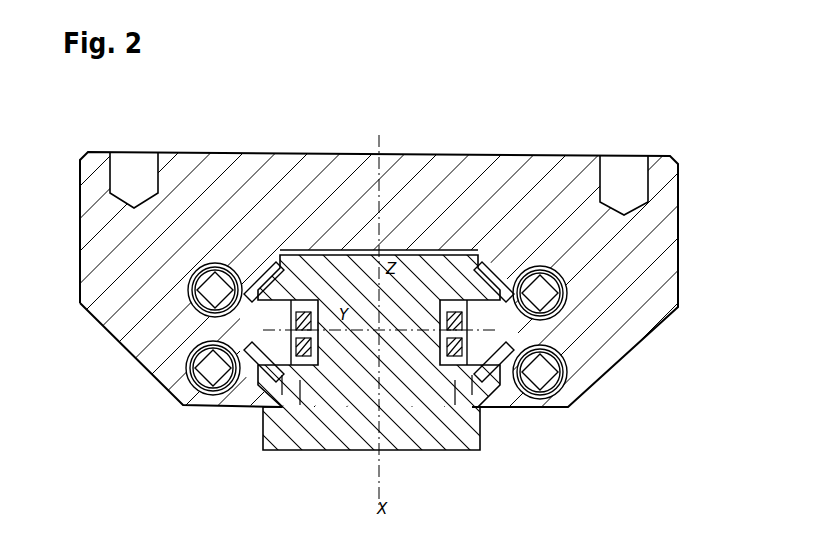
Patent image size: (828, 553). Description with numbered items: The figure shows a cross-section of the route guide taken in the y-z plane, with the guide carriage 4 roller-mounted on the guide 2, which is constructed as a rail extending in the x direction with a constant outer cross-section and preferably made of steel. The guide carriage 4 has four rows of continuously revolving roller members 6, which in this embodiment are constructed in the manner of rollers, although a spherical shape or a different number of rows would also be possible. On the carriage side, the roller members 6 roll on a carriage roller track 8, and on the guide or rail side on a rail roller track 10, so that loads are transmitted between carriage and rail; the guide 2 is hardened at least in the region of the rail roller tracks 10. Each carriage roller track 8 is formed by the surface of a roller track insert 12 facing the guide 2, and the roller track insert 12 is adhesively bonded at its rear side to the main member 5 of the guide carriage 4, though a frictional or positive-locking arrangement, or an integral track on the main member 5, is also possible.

The guide 2 is at (481, 450).
The guide carriage 4 is at (443, 150).
The main member 5 is at (512, 172).
The roller members 6 is at (288, 292).
The carriage roller track 8 is at (300, 407).
The rail roller track 10 is at (262, 322).
The roller track insert 12 is at (257, 288).